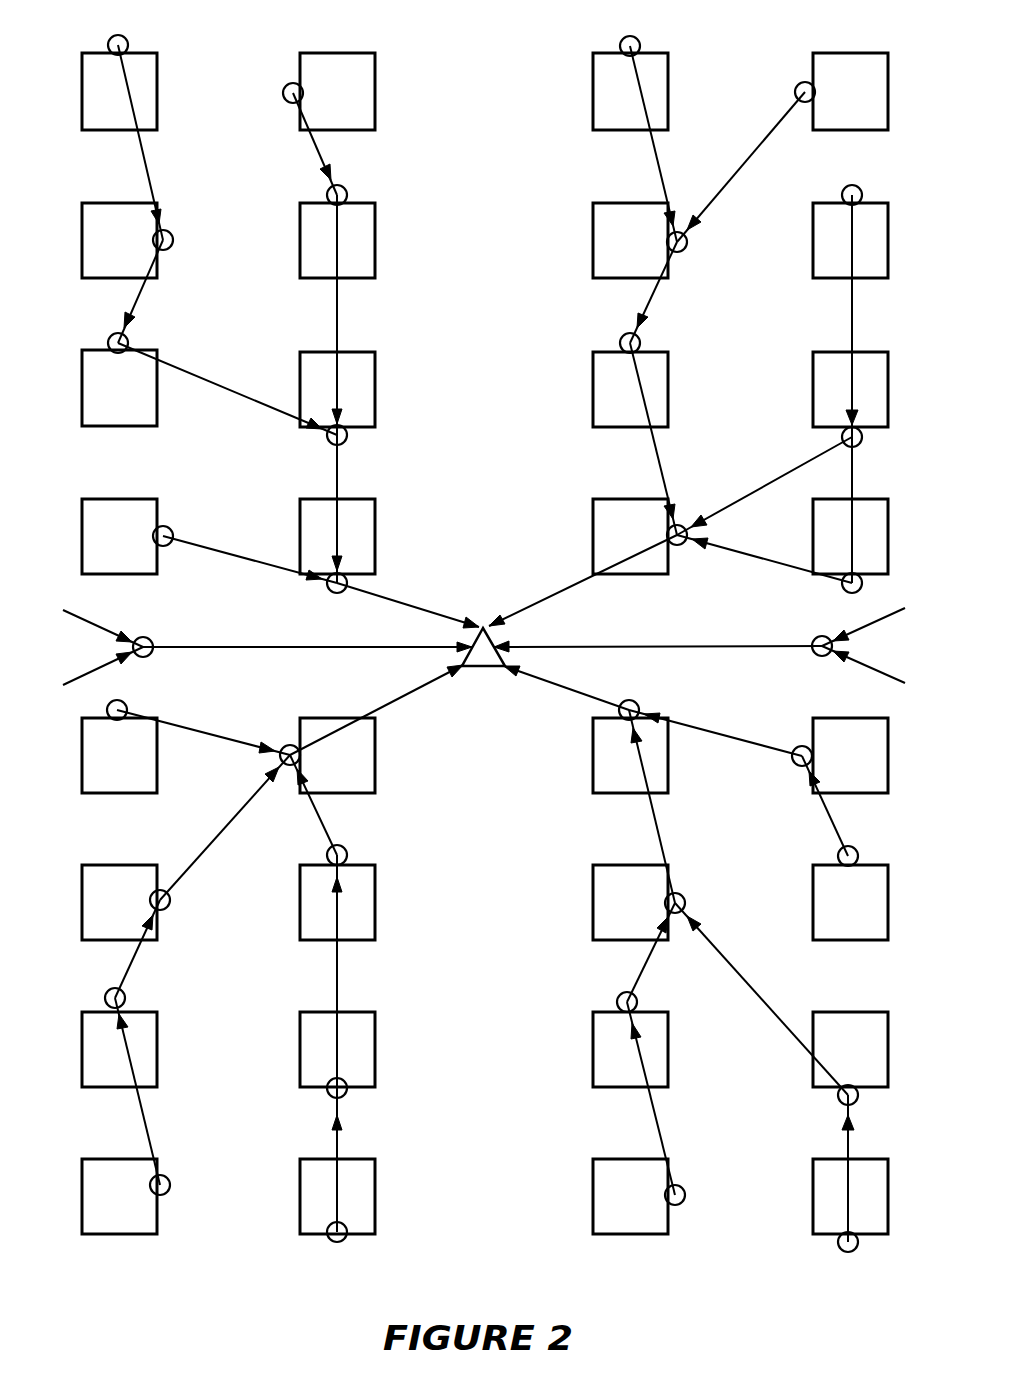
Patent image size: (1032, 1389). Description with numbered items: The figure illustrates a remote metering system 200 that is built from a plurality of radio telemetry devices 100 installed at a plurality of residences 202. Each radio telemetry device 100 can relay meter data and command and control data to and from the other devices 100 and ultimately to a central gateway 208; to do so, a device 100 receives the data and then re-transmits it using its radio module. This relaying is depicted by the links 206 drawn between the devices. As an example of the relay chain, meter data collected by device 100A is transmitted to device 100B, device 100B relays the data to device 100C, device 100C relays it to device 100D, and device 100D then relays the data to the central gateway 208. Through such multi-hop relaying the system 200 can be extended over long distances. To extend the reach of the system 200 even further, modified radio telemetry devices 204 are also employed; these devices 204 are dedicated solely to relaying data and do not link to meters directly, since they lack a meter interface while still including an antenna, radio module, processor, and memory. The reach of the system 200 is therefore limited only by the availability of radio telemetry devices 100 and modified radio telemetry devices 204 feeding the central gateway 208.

The radio telemetry device 100 is at (130, 47).
The radio telemetry device 100A is at (171, 1188).
The radio telemetry device 100B is at (125, 1000).
The radio telemetry device 100C is at (168, 911).
The radio telemetry device 100D is at (298, 746).
The remote metering system 200 is at (488, 36).
The residences 202 is at (593, 92).
The modified radio telemetry device 204 is at (146, 637).
The links 206 is at (650, 297).
The central gateway 208 is at (483, 653).